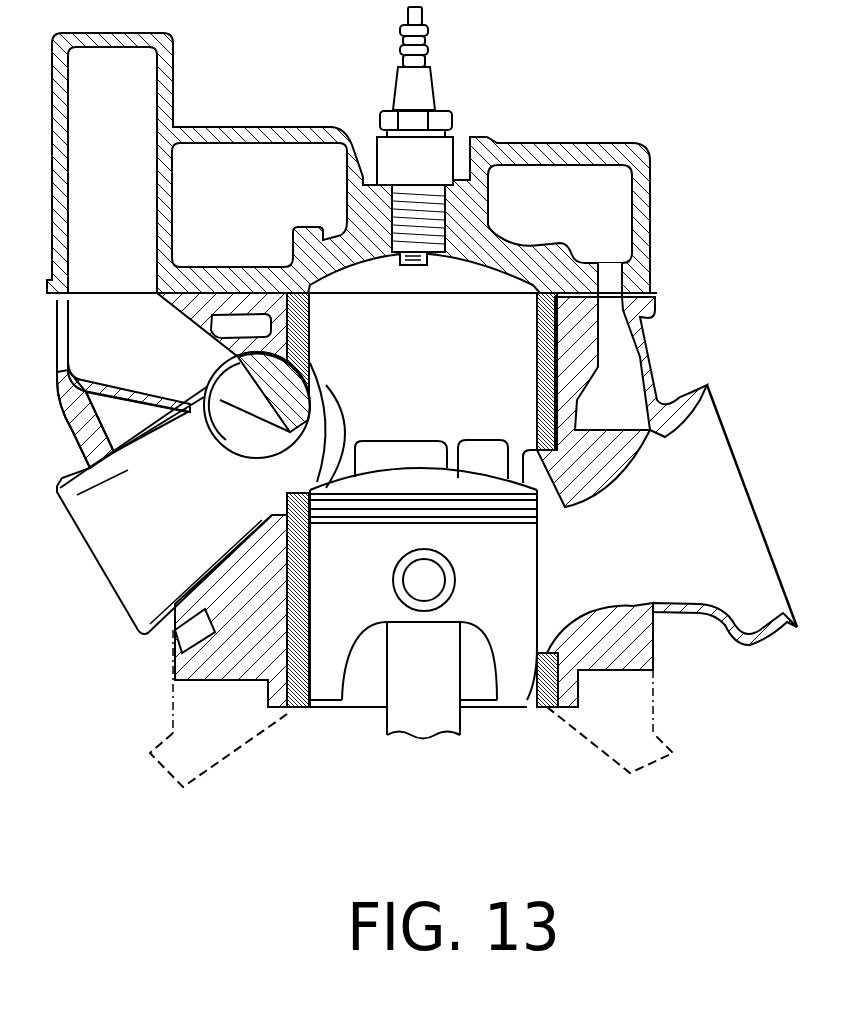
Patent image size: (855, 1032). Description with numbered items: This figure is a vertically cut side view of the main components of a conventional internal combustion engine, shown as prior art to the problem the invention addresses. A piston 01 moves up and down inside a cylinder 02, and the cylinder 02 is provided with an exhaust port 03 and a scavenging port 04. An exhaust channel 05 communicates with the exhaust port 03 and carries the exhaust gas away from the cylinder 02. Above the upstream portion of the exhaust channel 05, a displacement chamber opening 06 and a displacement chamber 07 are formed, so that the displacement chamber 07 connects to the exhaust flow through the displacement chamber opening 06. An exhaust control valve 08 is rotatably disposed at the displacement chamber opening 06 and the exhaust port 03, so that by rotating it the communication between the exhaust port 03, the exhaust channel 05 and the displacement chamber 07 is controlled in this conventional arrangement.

The piston 01 is at (493, 630).
The cylinder 02 is at (433, 367).
The exhaust port 03 is at (328, 397).
The scavenging port 04 is at (437, 453).
The exhaust channel 05 is at (178, 556).
The displacement chamber opening 06 is at (223, 388).
The displacement chamber 07 is at (128, 197).
The exhaust control valve 08 is at (283, 423).